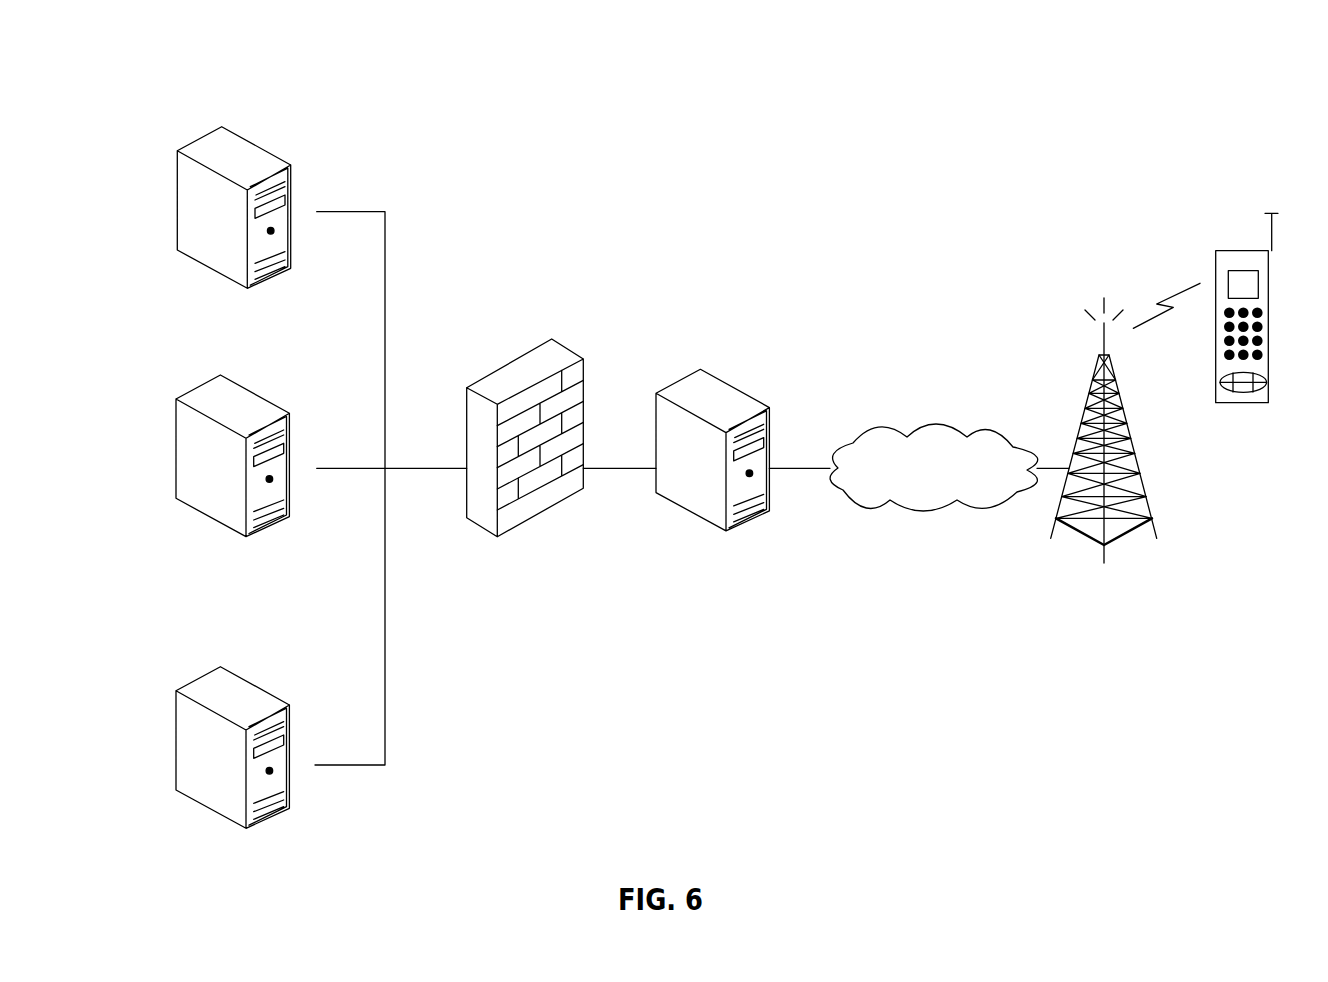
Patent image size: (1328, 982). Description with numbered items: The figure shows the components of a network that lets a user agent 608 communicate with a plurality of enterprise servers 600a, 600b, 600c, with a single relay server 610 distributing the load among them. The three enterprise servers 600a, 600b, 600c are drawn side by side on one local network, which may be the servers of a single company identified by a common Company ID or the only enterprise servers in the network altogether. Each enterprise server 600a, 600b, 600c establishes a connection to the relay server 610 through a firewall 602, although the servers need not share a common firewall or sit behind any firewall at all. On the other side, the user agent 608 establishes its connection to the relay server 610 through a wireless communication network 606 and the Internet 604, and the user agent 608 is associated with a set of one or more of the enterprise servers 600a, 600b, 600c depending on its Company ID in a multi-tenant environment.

The enterprise server 600a is at (177, 195).
The enterprise server 600b is at (176, 463).
The enterprise server 600c is at (176, 753).
The firewall 602 is at (531, 515).
The Internet 604 is at (930, 512).
The wireless communication network 606 is at (1104, 563).
The user agent 608 is at (1240, 403).
The relay server 610 is at (745, 527).